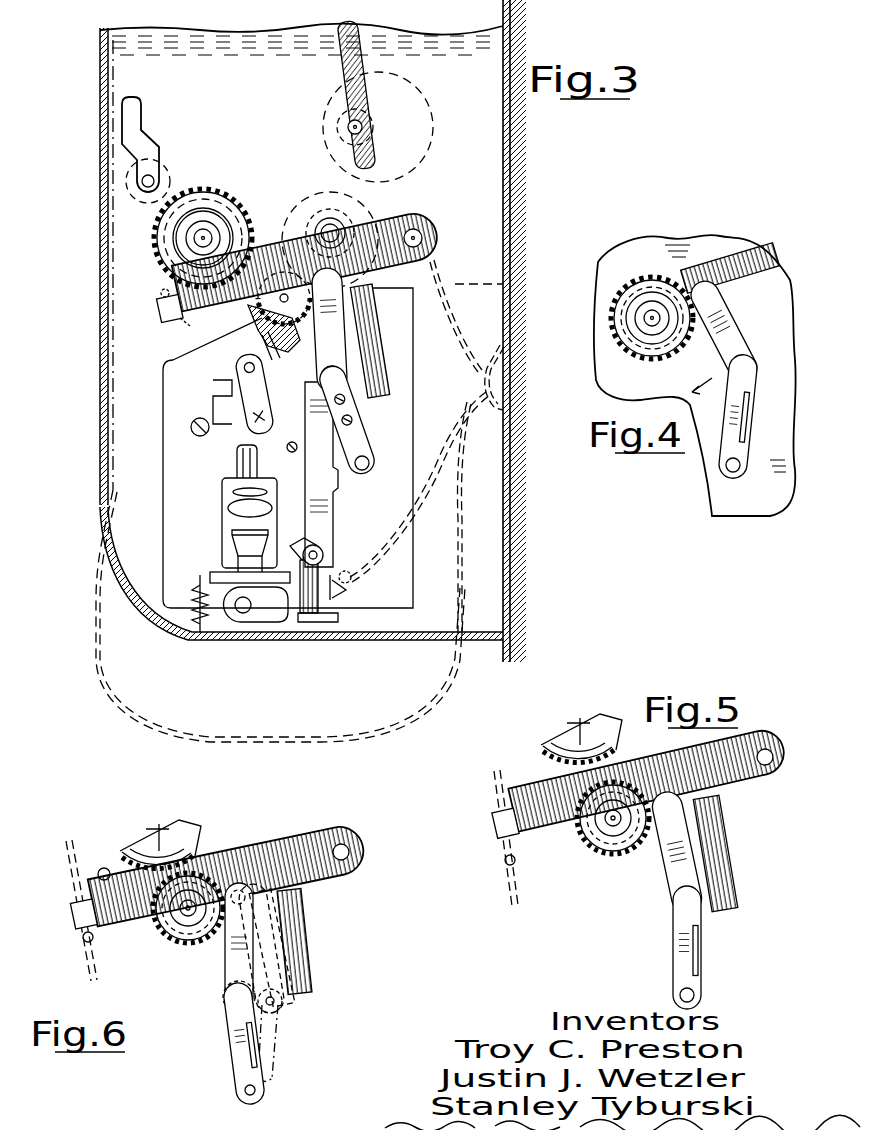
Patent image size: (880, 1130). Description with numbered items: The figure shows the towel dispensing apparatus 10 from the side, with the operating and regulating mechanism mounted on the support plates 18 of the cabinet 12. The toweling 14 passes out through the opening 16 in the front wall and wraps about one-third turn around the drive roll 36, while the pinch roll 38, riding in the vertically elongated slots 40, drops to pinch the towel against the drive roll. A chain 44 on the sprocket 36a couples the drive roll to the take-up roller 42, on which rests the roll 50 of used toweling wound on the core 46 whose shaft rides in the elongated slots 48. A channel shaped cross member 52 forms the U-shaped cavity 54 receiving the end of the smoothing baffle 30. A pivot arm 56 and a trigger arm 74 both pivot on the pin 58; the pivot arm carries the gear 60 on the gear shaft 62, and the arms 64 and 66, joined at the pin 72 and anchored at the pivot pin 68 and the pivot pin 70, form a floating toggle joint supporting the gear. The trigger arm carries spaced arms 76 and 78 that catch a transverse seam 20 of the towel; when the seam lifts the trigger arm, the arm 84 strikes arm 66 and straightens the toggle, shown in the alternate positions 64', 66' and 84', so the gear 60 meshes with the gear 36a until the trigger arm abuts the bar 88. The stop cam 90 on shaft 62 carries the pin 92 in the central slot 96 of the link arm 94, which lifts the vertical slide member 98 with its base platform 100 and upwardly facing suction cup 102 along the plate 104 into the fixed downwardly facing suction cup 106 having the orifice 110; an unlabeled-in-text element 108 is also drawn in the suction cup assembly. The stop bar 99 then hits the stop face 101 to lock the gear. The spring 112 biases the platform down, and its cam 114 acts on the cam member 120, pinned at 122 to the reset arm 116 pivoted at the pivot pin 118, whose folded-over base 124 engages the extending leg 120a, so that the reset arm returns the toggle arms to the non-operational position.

In FIG. 3, the towel dispensing apparatus 10 is at (79, 531).
In FIG. 3, the cabinet 12 is at (98, 371).
In FIG. 3, the toweling 14 is at (510, 282).
In FIG. 5, the toweling 14 is at (494, 784).
In FIG. 6, the toweling 14 is at (68, 848).
In FIG. 3, the opening 16 is at (102, 506).
In FIG. 3, the support plates 18 is at (301, 46).
In FIG. 4, the support plates 18 is at (688, 265).
In FIG. 3, the transverse seam 20 is at (160, 290).
In FIG. 5, the transverse seam 20 is at (505, 862).
In FIG. 6, the transverse seam 20 is at (84, 942).
In FIG. 3, the smoothing baffle 30 is at (438, 490).
In FIG. 3, the drive roll 36 is at (228, 195).
In FIG. 3, the sprocket/gear of the drive roll 36a is at (186, 195).
In FIG. 5, the sprocket/gear of the drive roll 36a is at (580, 722).
In FIG. 6, the sprocket/gear of the drive roll 36a is at (158, 835).
In FIG. 3, the pinch roll 38 is at (128, 176).
In FIG. 3, the vertically elongated slots 40 is at (140, 106).
In FIG. 3, the take-up roller 42 is at (372, 198).
In FIG. 3, the chain 44 is at (305, 218).
In FIG. 3, the used towel take-up core 46 is at (418, 118).
In FIG. 3, the elongated slots 48 is at (352, 48).
In FIG. 3, the roll 50 is at (352, 93).
In FIG. 3, the channel shaped cross member 52 is at (498, 376).
In FIG. 3, the U-shaped cavity 54 is at (512, 440).
In FIG. 3, the pivot arm 56 is at (440, 258).
In FIG. 4, the pivot arm 56 is at (760, 246).
In FIG. 5, the pivot arm 56 is at (728, 794).
In FIG. 6, the pivot arm 56 is at (255, 856).
In FIG. 3, the pivot pin 58 is at (423, 236).
In FIG. 5, the pivot pin 58 is at (772, 768).
In FIG. 6, the pivot pin 58 is at (352, 848).
In FIG. 3, the gear 60 is at (282, 269).
In FIG. 4, the gear 60 is at (640, 292).
In FIG. 5, the gear 60 is at (585, 842).
In FIG. 6, the gear 60 is at (160, 925).
In FIG. 3, the gear shaft 62 is at (282, 284).
In FIG. 4, the gear shaft 62 is at (652, 322).
In FIG. 5, the gear shaft 62 is at (611, 824).
In FIG. 6, the gear shaft 62 is at (186, 914).
In FIG. 3, the arm 64 is at (329, 329).
In FIG. 4, the arm 64 is at (733, 331).
In FIG. 5, the arm 64 is at (662, 852).
In FIG. 6, the arm 64 is at (289, 947).
In FIG. 6, the arm in elevated position 64' is at (228, 948).
In FIG. 3, the arm 66 is at (357, 420).
In FIG. 4, the arm 66 is at (753, 416).
In FIG. 5, the arm 66 is at (658, 947).
In FIG. 6, the arm 66 is at (292, 1043).
In FIG. 6, the arm in elevated position 66' is at (221, 1043).
In FIG. 3, the pivot pin 68 is at (338, 290).
In FIG. 4, the pivot pin 68 is at (712, 290).
In FIG. 5, the pivot pin 68 is at (672, 800).
In FIG. 3, the pivot pin 70 is at (369, 467).
In FIG. 4, the pivot pin 70 is at (736, 472).
In FIG. 5, the pivot pin 70 is at (696, 992).
In FIG. 3, the pin 72 is at (345, 377).
In FIG. 4, the pin 72 is at (752, 362).
In FIG. 5, the pin 72 is at (676, 902).
In FIG. 6, the pin 72 is at (232, 1003).
In FIG. 3, the trigger arm 74 is at (423, 203).
In FIG. 5, the trigger arm 74 is at (548, 822).
In FIG. 6, the trigger arm 74 is at (298, 836).
In FIG. 3, the arm 76 is at (170, 300).
In FIG. 6, the arm 76 is at (116, 894).
In FIG. 3, the arm 78 is at (180, 316).
In FIG. 6, the arm 78 is at (72, 904).
In FIG. 3, the arm 84 is at (397, 341).
In FIG. 5, the arm 84 is at (740, 853).
In FIG. 6, the arm 84 is at (323, 942).
In FIG. 6, the arm in elevated position 84' is at (301, 948).
In FIG. 6, the bar 88 is at (104, 868).
In FIG. 3, the stop cam 90 is at (240, 326).
In FIG. 3, the pin 92 is at (262, 343).
In FIG. 3, the link arm 94 is at (240, 403).
In FIG. 3, the central slot 96 is at (246, 367).
In FIG. 3, the vertical slide member 98 is at (220, 446).
In FIG. 3, the stop bar 99 is at (298, 407).
In FIG. 3, the base platform 100 is at (218, 600).
In FIG. 3, the stop face 101 is at (214, 387).
In FIG. 3, the upwardly facing suction cup 102 is at (235, 552).
In FIG. 3, the plate 104 is at (232, 500).
In FIG. 3, the fixed downwardly facing suction cup 106 is at (230, 516).
In FIG. 3, the plunger cup 108 is at (230, 533).
In FIG. 3, the orifice 110 is at (238, 462).
In FIG. 3, the spring 112 is at (198, 612).
In FIG. 3, the cam 114 is at (289, 588).
In FIG. 3, the reset arm 116 is at (336, 500).
In FIG. 3, the pivot pin 118 is at (245, 614).
In FIG. 3, the cam member 120 is at (348, 590).
In FIG. 3, the extending leg 120a is at (312, 606).
In FIG. 3, the pin 122 is at (320, 550).
In FIG. 3, the folded-over base 124 is at (325, 612).